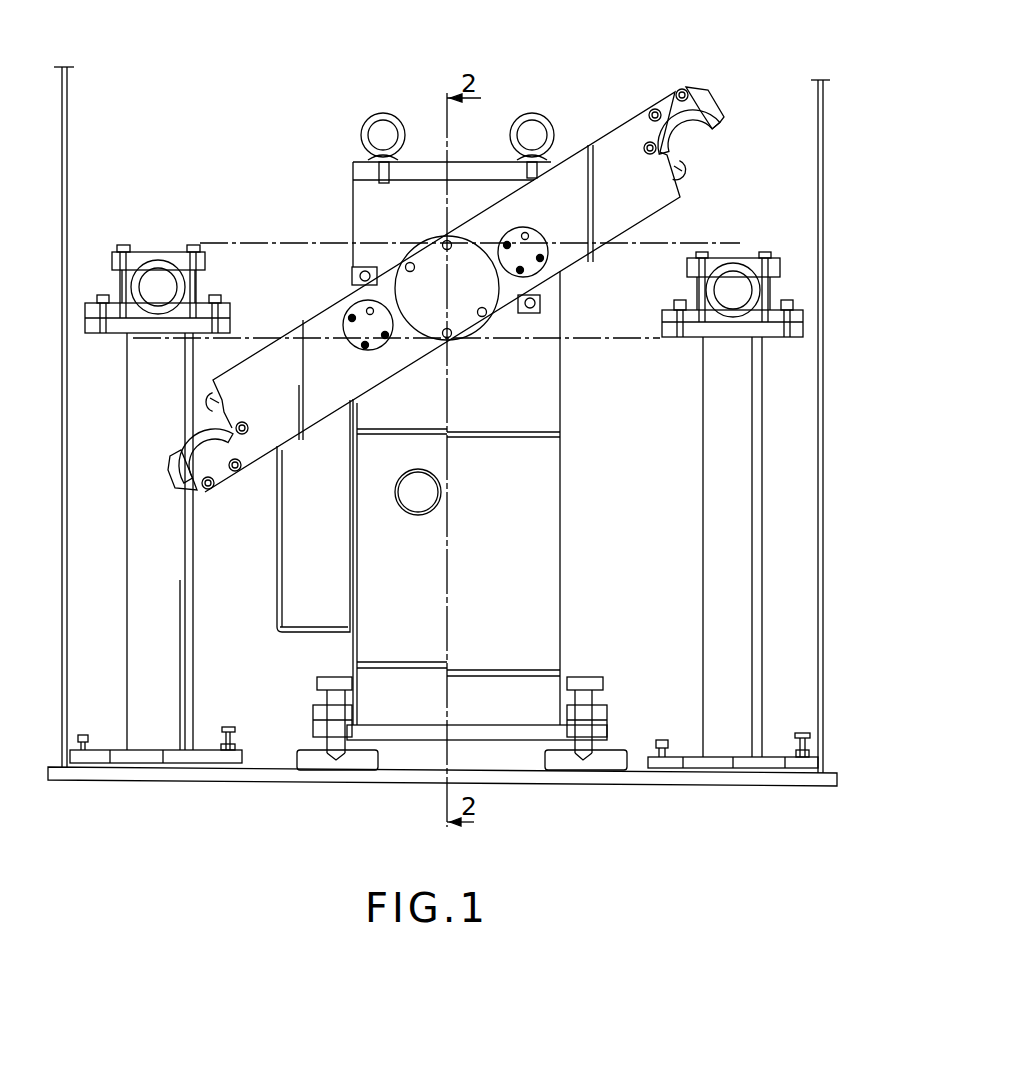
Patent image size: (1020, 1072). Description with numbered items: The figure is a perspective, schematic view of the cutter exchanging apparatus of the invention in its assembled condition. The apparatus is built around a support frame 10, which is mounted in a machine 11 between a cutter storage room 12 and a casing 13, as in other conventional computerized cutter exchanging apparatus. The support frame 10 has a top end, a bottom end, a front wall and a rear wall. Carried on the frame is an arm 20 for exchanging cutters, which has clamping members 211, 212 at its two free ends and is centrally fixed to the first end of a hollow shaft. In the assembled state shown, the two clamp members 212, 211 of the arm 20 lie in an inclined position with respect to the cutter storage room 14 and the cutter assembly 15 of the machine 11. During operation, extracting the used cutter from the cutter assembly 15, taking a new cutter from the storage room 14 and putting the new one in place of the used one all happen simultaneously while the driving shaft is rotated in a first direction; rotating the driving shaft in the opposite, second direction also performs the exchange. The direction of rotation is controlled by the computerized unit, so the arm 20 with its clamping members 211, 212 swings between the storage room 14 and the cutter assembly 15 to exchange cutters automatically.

The support frame 10 is at (218, 713).
The machine 11 is at (260, 777).
The cutter storage room 12 is at (152, 562).
The casing 13 is at (377, 205).
The cutter storage room 14 is at (152, 253).
The cutter assembly 15 is at (748, 260).
The arm 20 is at (613, 183).
The clamping member 211 is at (220, 463).
The clamping member 212 is at (677, 88).